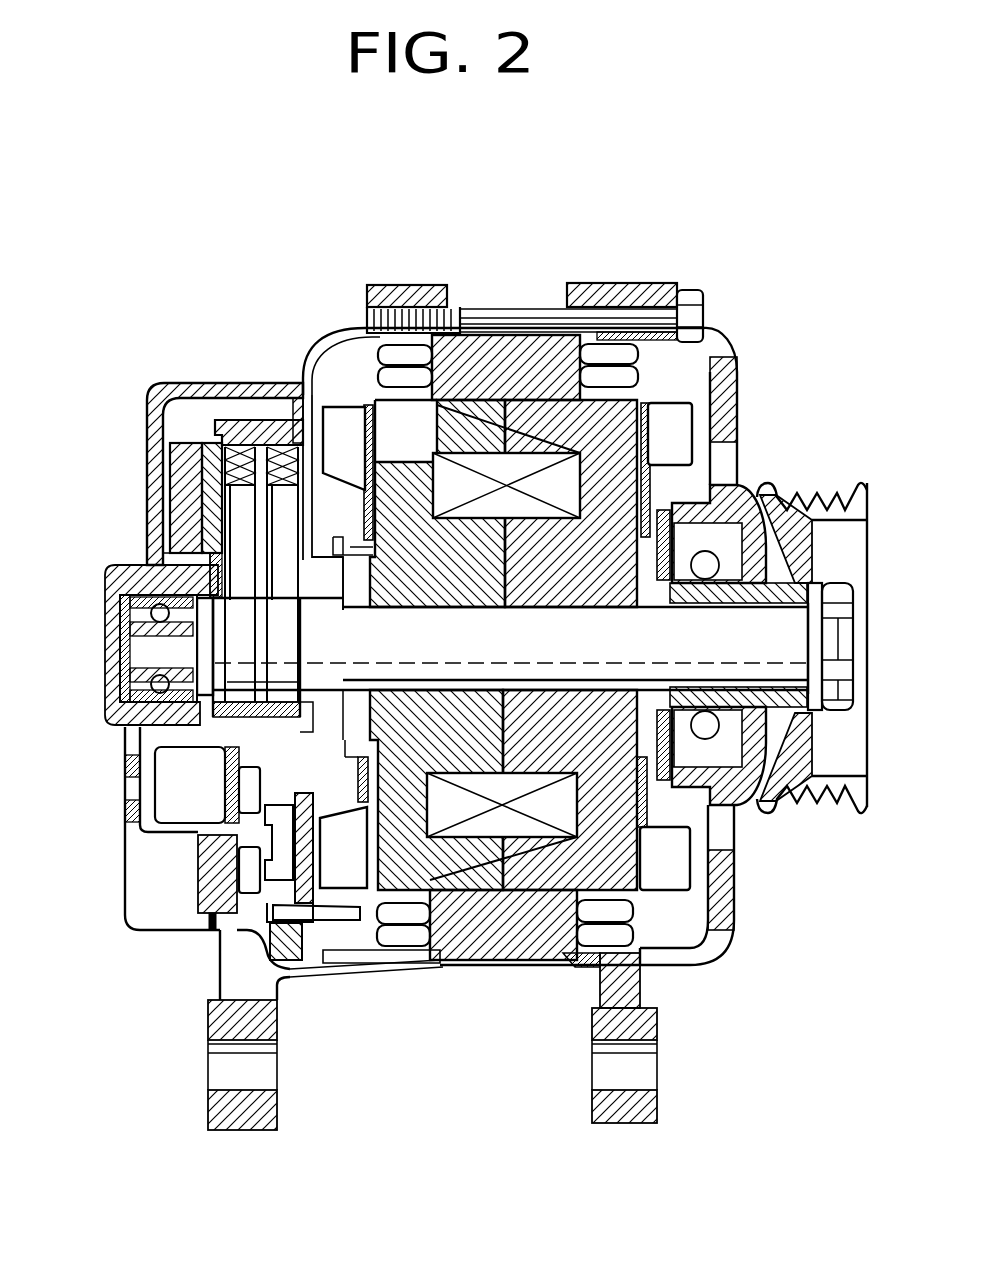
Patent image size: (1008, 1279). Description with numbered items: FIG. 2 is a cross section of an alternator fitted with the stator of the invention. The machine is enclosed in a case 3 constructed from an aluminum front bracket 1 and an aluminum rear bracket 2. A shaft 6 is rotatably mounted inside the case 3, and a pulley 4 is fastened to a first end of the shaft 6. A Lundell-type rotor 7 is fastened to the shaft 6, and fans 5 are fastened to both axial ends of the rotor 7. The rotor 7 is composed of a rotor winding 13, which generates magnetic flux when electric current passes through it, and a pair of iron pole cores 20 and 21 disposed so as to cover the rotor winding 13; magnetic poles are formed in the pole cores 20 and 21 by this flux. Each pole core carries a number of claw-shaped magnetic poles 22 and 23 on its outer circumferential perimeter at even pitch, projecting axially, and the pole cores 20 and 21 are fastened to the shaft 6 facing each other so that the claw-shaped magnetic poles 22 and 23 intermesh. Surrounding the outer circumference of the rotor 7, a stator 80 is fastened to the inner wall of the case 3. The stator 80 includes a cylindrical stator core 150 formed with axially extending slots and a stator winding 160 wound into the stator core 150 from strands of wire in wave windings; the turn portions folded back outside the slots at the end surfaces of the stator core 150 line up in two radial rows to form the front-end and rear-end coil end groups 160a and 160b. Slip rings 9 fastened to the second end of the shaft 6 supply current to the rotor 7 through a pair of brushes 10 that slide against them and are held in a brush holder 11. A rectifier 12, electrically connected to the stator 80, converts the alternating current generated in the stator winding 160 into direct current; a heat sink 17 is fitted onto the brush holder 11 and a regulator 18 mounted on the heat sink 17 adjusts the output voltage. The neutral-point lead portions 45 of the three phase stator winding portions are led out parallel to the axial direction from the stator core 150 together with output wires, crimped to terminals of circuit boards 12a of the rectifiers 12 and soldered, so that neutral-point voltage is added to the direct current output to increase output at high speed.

The front bracket 1 is at (735, 880).
The rear bracket 2 is at (140, 925).
The case 3 is at (736, 938).
The pulley 4 is at (830, 492).
The fans 5 is at (685, 425).
The shaft 6 is at (790, 653).
The rotor 7 is at (570, 1045).
The slip rings 9 is at (240, 644).
The brushes 10 is at (237, 537).
The brush holder 11 is at (245, 425).
The rectifier 12 is at (178, 800).
The circuit board 12a is at (275, 897).
The rotor winding 13 is at (493, 815).
The heat sink 17 is at (176, 491).
The regulator 18 is at (183, 463).
The pole core 20 is at (593, 843).
The pole core 21 is at (407, 797).
The claw-shaped magnetic poles 22 is at (630, 400).
The claw-shaped magnetic poles 23 is at (385, 420).
The neutral-point lead portions 45 is at (325, 930).
The stator 80 is at (535, 562).
The stator core 150 is at (493, 345).
The stator winding 160 is at (562, 350).
The front-end coil end group 160a is at (463, 212).
The rear-end coil end group 160b is at (415, 290).